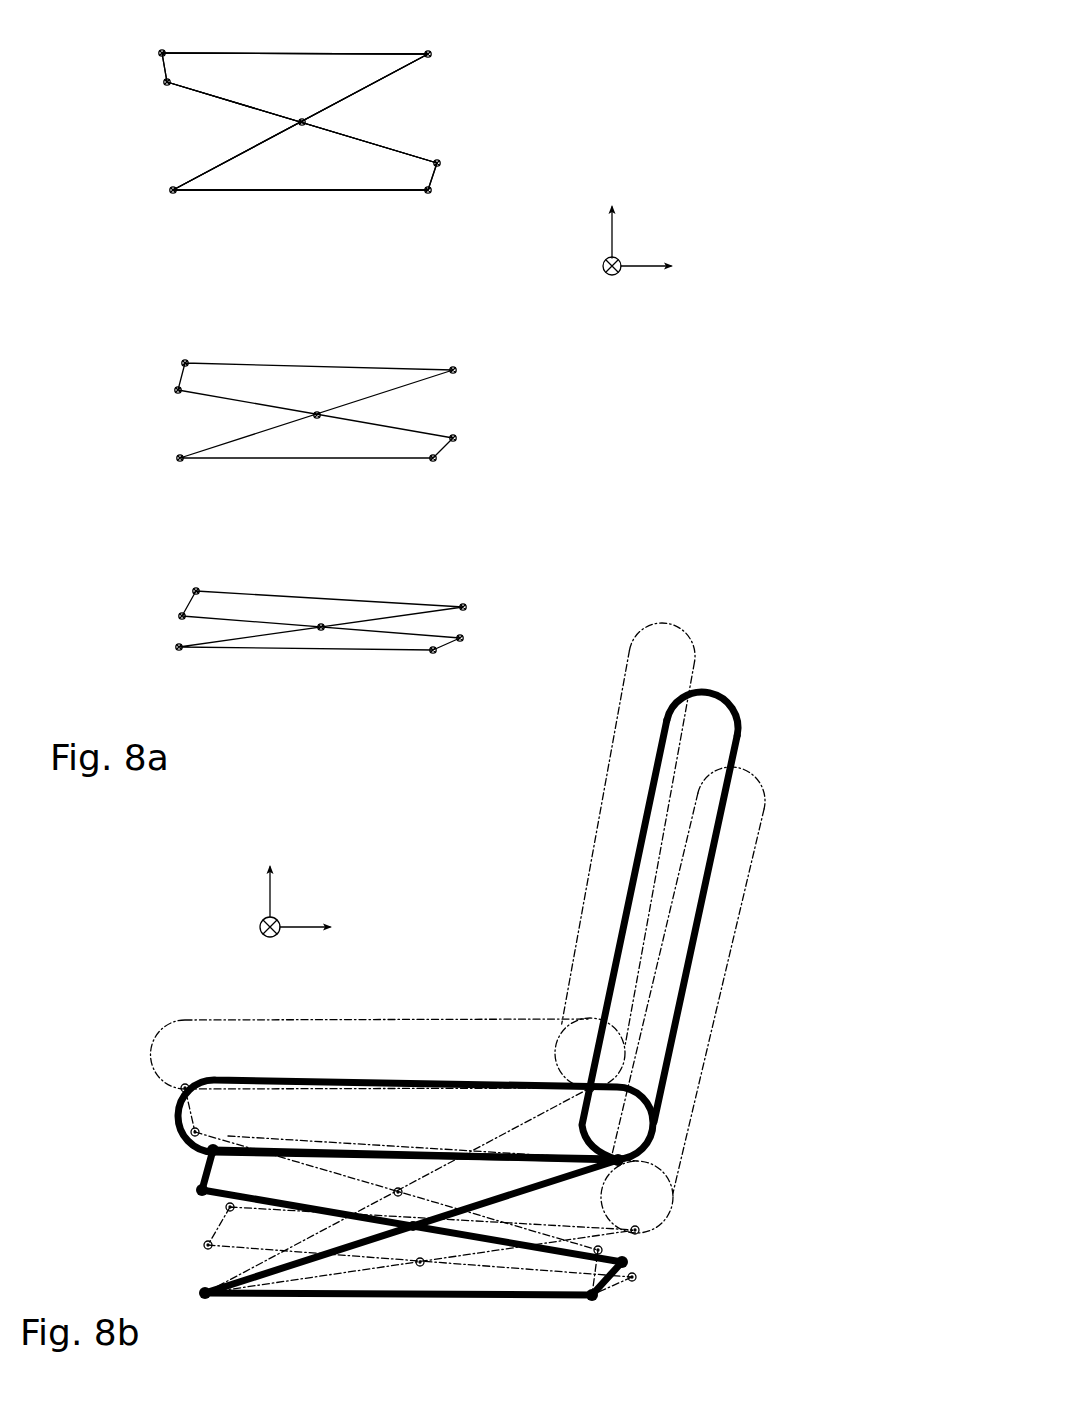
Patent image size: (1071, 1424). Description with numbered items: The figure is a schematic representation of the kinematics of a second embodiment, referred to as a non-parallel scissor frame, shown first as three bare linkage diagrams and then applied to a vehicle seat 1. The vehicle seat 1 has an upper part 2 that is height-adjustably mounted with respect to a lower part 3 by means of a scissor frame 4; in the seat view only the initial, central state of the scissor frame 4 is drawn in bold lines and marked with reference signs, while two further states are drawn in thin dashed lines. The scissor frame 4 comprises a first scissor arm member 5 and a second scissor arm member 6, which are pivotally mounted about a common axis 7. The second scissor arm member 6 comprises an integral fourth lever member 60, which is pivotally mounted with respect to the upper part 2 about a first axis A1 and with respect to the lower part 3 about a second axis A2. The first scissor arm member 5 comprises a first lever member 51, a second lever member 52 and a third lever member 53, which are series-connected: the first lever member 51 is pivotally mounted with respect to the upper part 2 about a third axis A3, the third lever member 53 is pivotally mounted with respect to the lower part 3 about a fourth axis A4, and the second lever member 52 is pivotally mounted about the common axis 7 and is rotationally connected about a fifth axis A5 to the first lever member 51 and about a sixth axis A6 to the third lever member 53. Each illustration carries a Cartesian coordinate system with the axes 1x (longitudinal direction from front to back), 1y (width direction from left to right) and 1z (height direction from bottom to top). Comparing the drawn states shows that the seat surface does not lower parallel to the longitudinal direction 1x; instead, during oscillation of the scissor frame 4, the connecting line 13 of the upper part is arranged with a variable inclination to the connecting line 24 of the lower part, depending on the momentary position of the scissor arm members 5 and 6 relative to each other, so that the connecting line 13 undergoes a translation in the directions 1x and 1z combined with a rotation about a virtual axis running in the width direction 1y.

In FIG. 8b, the vehicle seat 1 is at (540, 838).
In FIG. 8a, the upper part 2 is at (283, 53).
In FIG. 8b, the upper part 2 is at (770, 952).
In FIG. 8a, the lower part 3 is at (313, 190).
In FIG. 8a, the scissor frame 4 is at (480, 100).
In FIG. 8b, the scissor frame 4 is at (437, 1214).
In FIG. 8a, the first scissor arm member 5 is at (210, 104).
In FIG. 8b, the first scissor arm member 5 is at (412, 1210).
In FIG. 8a, the second scissor arm member 6 is at (208, 162).
In FIG. 8b, the second scissor arm member 6 is at (411, 1226).
In FIG. 8a, the common axis 7 is at (302, 125).
In FIG. 8b, the common axis 7 is at (413, 1233).
In FIG. 8a, the connecting line 13 is at (338, 53).
In FIG. 8b, the connecting line 13 is at (320, 1148).
In FIG. 8a, the connecting line 24 is at (372, 190).
In FIG. 8b, the connecting line 24 is at (437, 1297).
In FIG. 8a, the first lever member 51 is at (163, 67).
In FIG. 8b, the first lever member 51 is at (200, 1172).
In FIG. 8a, the second lever member 52 is at (245, 107).
In FIG. 8b, the second lever member 52 is at (273, 1200).
In FIG. 8a, the third lever member 53 is at (433, 176).
In FIG. 8b, the third lever member 53 is at (610, 1282).
In FIG. 8a, the fourth lever member 60 is at (392, 75).
In FIG. 8b, the fourth lever member 60 is at (532, 1190).
In FIG. 8a, the first axis A1 is at (430, 52).
In FIG. 8b, the first axis A1 is at (625, 1163).
In FIG. 8a, the second axis A2 is at (173, 193).
In FIG. 8b, the second axis A2 is at (200, 1293).
In FIG. 8a, the third axis A3 is at (159, 51).
In FIG. 8b, the third axis A3 is at (208, 1150).
In FIG. 8a, the fourth axis A4 is at (431, 191).
In FIG. 8b, the fourth axis A4 is at (594, 1299).
In FIG. 8a, the fifth axis A5 is at (164, 84).
In FIG. 8b, the fifth axis A5 is at (197, 1191).
In FIG. 8a, the sixth axis A6 is at (439, 161).
In FIG. 8b, the sixth axis A6 is at (628, 1258).
In FIG. 8a, the longitudinal direction axis 1x is at (650, 267).
In FIG. 8b, the longitudinal direction axis 1x is at (307, 928).
In FIG. 8a, the width direction axis 1y is at (606, 273).
In FIG. 8b, the width direction axis 1y is at (264, 935).
In FIG. 8a, the height direction axis 1z is at (611, 229).
In FIG. 8b, the height direction axis 1z is at (269, 897).